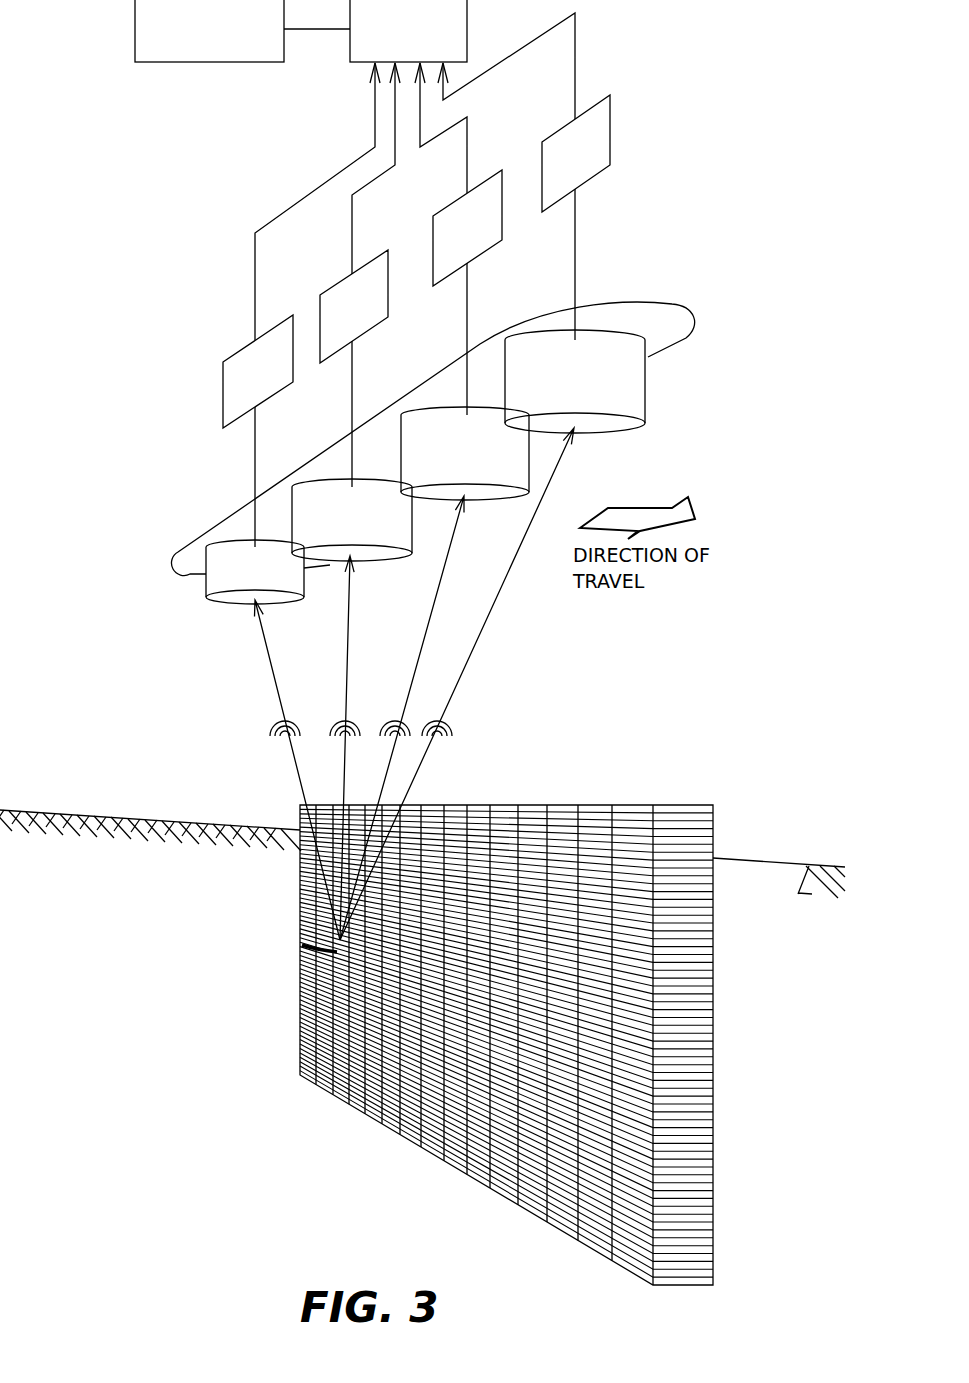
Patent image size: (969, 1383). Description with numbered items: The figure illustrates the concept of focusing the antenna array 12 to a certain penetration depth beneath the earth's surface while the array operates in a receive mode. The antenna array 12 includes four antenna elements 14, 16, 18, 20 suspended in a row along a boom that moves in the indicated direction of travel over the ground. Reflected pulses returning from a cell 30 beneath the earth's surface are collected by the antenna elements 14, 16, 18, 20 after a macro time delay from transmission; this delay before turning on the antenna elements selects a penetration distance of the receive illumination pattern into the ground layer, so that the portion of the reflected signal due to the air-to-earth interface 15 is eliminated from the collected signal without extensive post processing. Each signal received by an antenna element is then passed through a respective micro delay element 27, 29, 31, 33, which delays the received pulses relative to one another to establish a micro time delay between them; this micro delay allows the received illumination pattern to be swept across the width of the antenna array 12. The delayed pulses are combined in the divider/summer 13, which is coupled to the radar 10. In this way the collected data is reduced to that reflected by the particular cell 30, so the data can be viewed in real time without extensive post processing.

The radar 10 is at (135, 30).
The divider/summer 13 is at (467, 30).
The antenna array 12 is at (157, 536).
The antenna element 14 is at (291, 601).
The antenna element 16 is at (378, 553).
The antenna element 18 is at (478, 497).
The antenna element 20 is at (590, 428).
The micro delay element 27 is at (290, 315).
The micro delay element 29 is at (390, 251).
The micro delay element 31 is at (500, 171).
The micro delay element 33 is at (612, 96).
The air-to-earth interface 15 is at (806, 862).
The cell 30 is at (302, 946).